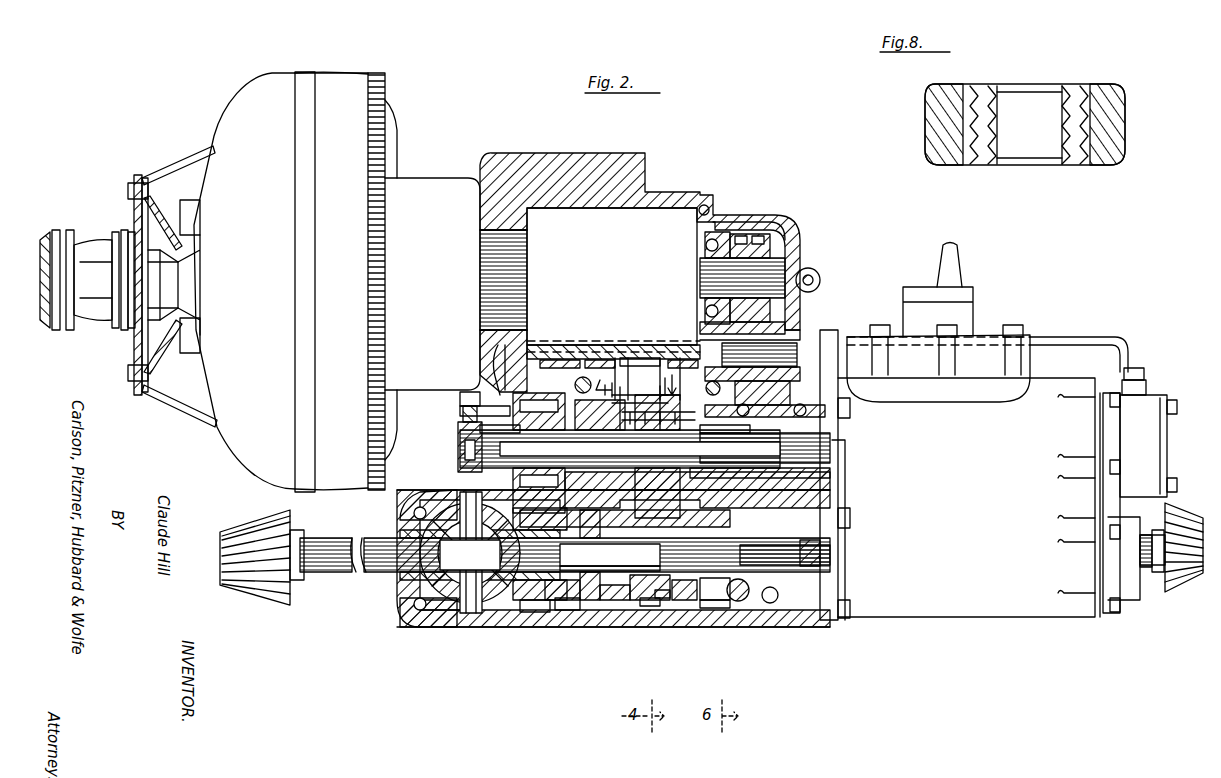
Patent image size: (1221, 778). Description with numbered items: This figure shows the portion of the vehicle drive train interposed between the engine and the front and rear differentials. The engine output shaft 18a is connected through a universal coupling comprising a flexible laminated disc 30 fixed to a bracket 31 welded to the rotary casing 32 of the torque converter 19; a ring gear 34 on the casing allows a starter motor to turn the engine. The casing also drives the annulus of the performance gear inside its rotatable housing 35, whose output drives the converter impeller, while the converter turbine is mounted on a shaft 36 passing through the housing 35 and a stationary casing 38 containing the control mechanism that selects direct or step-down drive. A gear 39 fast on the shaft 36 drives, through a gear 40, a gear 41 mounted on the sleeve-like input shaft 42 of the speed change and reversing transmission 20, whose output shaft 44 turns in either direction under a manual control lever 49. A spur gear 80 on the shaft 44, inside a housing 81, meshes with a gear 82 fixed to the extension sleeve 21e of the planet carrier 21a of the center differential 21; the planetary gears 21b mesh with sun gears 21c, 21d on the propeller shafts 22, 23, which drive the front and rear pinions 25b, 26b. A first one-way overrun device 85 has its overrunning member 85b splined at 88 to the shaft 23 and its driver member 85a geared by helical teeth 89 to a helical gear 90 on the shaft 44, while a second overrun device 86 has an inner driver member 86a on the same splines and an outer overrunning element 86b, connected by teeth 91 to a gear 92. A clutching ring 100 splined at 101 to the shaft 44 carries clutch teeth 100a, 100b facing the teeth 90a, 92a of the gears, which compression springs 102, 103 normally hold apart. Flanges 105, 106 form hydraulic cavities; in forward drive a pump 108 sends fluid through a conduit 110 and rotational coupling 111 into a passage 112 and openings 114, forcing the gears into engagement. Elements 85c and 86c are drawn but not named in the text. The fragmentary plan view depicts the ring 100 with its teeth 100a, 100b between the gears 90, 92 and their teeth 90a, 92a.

In FIG. 2, the output shaft 18a is at (50, 245).
In FIG. 2, the torque converter 19 is at (268, 72).
In FIG. 2, the speed change and reversing transmission 20 is at (990, 617).
In FIG. 2, the center differential 21 is at (455, 615).
In FIG. 2, the planet carrier 21a is at (490, 612).
In FIG. 2, the planetary gears 21b is at (455, 510).
In FIG. 2, the sun gear 21c is at (432, 612).
In FIG. 2, the sun gear 21d is at (512, 615).
In FIG. 2, the extension sleeve 21e is at (562, 612).
In FIG. 2, the front propeller shaft 22 is at (370, 572).
In FIG. 2, the rear propeller shaft 23 is at (812, 553).
In FIG. 2, the front pinion 25b is at (282, 590).
In FIG. 2, the rear pinion 26b is at (1182, 595).
In FIG. 2, the flexible laminated disc 30 is at (134, 208).
In FIG. 2, the bracket 31 is at (158, 163).
In FIG. 2, the rotary casing 32 is at (247, 109).
In FIG. 2, the ring gear 34 is at (386, 106).
In FIG. 2, the housing 35 is at (440, 252).
In FIG. 2, the shaft 36 is at (790, 266).
In FIG. 2, the stationary casing 38 is at (578, 252).
In FIG. 2, the gear 39 is at (752, 230).
In FIG. 2, the gear 40 is at (790, 326).
In FIG. 2, the gear 41 is at (770, 418).
In FIG. 2, the input shaft 42 is at (838, 444).
In FIG. 2, the output shaft 44 is at (720, 466).
In FIG. 2, the manual control lever 49 is at (960, 262).
In FIG. 2, the spur gear 80 is at (555, 395).
In FIG. 2, the housing 81 is at (590, 602).
In FIG. 2, the gear 82 is at (552, 602).
In FIG. 2, the first one-way overrun device 85 is at (650, 602).
In FIG. 2, the driver member 85a is at (655, 608).
In FIG. 2, the overrunning member 85b is at (640, 565).
In FIG. 2, the clutch spring 85c is at (662, 600).
In FIG. 2, the second overrun device 86 is at (712, 602).
In FIG. 2, the innermost member 86a is at (785, 552).
In FIG. 2, the outer element 86b is at (725, 608).
In FIG. 2, the shift rod ball 86c is at (718, 604).
In FIG. 2, the splines 88 is at (615, 548).
In FIG. 2, the helical gear teeth 89 is at (612, 602).
In FIG. 2, the helical gear 90 is at (592, 395).
In FIG. 8, the helical gear 90 is at (926, 121).
In FIG. 2, the clutch teeth 90a is at (618, 395).
In FIG. 8, the clutch teeth 90a is at (973, 165).
In FIG. 2, the helical gear teeth 91 is at (685, 602).
In FIG. 2, the gear 92 is at (698, 395).
In FIG. 8, the gear 92 is at (1115, 100).
In FIG. 2, the clutch teeth 92a is at (682, 395).
In FIG. 8, the clutch teeth 92a is at (1082, 84).
In FIG. 2, the clutching ring 100 is at (645, 395).
In FIG. 8, the clutching ring 100 is at (1020, 150).
In FIG. 2, the clutch teeth 100a is at (630, 395).
In FIG. 8, the clutch teeth 100a is at (998, 90).
In FIG. 2, the clutch teeth 100b is at (662, 395).
In FIG. 8, the clutch teeth 100b is at (1062, 158).
In FIG. 2, the splines 101 is at (662, 456).
In FIG. 2, the compression spring 102 is at (605, 445).
In FIG. 2, the compression spring 103 is at (658, 442).
In FIG. 2, the flange 105 is at (600, 408).
In FIG. 2, the flange 106 is at (708, 372).
In FIG. 2, the pump 108 is at (1148, 402).
In FIG. 2, the conduit 110 is at (497, 353).
In FIG. 2, the rotational coupling 111 is at (462, 422).
In FIG. 2, the passage 112 is at (539, 453).
In FIG. 2, the openings 114 is at (521, 460).